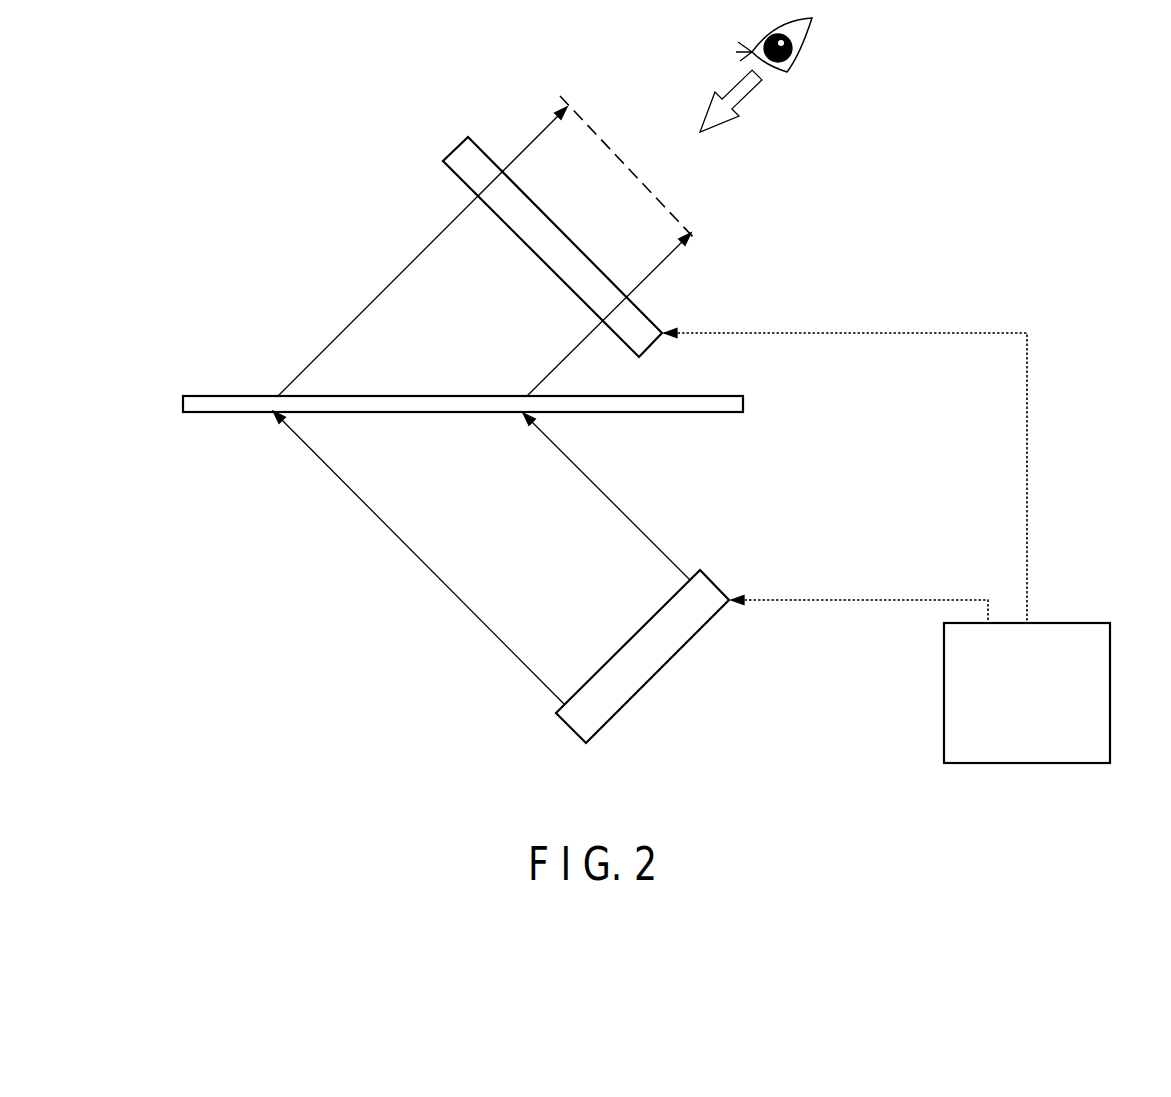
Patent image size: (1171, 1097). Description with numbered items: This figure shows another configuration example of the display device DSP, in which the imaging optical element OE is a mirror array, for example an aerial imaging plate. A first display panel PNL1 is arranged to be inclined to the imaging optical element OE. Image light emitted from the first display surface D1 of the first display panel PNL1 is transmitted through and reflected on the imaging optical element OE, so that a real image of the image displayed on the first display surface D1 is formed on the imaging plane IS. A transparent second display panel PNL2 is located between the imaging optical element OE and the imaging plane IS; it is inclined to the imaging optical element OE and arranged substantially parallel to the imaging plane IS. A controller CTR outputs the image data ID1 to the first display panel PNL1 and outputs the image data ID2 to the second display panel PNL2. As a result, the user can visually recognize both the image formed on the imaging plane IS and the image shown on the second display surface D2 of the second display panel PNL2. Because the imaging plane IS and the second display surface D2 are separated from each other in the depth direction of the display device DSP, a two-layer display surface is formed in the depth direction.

The second display panel PNL2 is at (453, 152).
The first display panel PNL1 is at (569, 728).
The second display surface D2 is at (566, 236).
The first display surface D1 is at (630, 639).
The imaging plane IS is at (694, 238).
The imaging optical element OE is at (200, 395).
The image data ID2 is at (845, 461).
The image data ID1 is at (859, 593).
The controller CTR is at (1088, 623).
The display device DSP is at (311, 655).